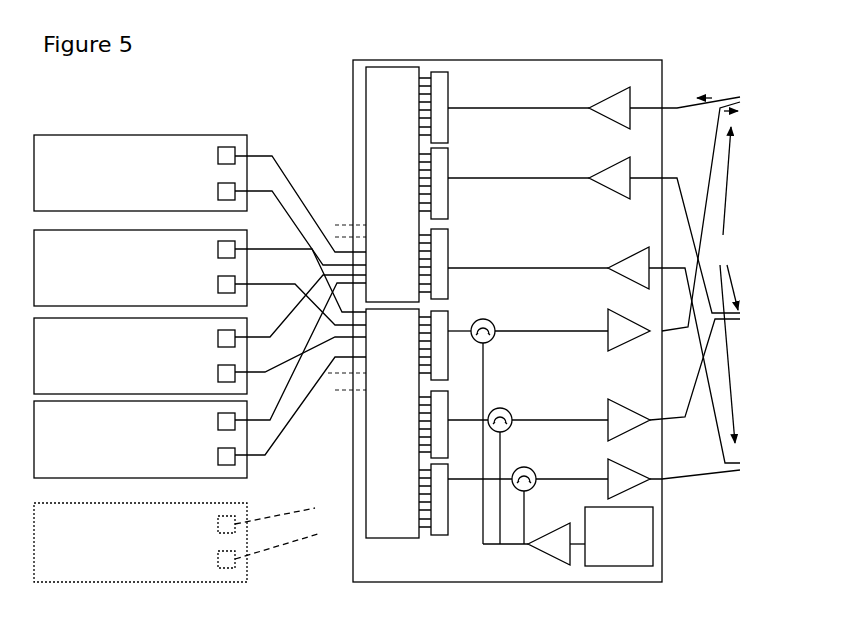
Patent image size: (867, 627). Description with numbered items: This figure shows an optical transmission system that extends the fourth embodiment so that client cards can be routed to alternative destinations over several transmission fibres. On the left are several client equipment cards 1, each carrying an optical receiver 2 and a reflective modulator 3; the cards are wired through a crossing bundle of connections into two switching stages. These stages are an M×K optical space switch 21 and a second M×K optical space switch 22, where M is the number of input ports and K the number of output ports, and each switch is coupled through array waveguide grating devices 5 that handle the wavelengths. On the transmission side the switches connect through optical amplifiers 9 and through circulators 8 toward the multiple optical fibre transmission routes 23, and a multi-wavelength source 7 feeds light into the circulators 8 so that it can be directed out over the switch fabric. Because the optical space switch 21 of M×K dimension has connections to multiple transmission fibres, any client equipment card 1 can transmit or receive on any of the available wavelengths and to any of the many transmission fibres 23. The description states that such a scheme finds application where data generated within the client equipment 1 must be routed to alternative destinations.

The client equipment card 1 is at (156, 160).
The optical receiver 2 is at (218, 142).
The reflective modulator 3 is at (212, 188).
The array waveguide grating device 5 is at (448, 86).
The multi-wavelength source 7 is at (637, 529).
The circulators 8 is at (497, 342).
The optical amplifier 9 is at (600, 168).
The M×K optical space switch 21 is at (381, 118).
The M×K optical space switch 22 is at (385, 531).
The multiple optical fibre transmission routes 23 is at (685, 288).